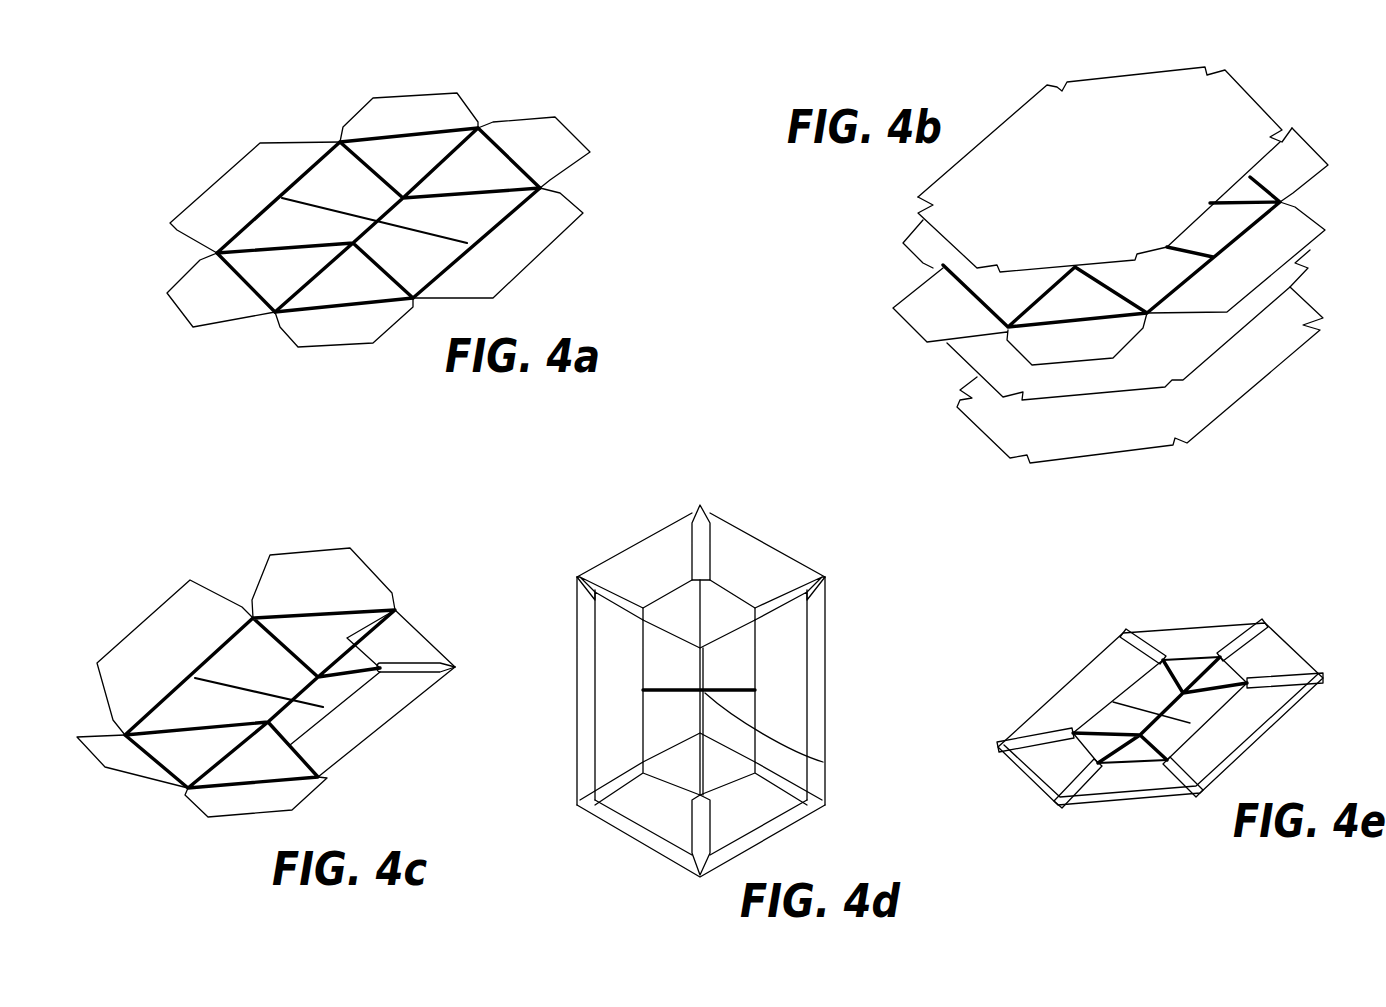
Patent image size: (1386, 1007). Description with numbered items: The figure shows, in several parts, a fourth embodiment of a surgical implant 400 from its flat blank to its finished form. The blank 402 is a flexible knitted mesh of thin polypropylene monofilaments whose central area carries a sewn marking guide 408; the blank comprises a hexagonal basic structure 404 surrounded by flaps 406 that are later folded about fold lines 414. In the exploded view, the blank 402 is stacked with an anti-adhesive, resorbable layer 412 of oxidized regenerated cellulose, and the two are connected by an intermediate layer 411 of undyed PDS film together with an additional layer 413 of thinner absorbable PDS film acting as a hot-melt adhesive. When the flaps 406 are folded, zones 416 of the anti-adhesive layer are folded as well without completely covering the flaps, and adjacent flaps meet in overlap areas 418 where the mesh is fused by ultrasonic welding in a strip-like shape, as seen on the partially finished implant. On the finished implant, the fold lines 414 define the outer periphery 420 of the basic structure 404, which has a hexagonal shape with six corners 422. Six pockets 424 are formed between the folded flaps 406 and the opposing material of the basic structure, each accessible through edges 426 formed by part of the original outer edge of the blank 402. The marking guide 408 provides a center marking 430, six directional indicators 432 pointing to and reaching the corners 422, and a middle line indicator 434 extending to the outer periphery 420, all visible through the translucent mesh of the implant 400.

In FIG. 4d, the surgical implant 400 is at (731, 677).
In FIG. 4e, the surgical implant 400 is at (1152, 720).
In FIG. 4a, the blank 402 is at (403, 242).
In FIG. 4b, the blank 402 is at (920, 297).
In FIG. 4a, the basic structure 404 is at (360, 198).
In FIG. 4c, the basic structure 404 is at (225, 718).
In FIG. 4a, the flaps 406 is at (252, 368).
In FIG. 4c, the flaps 406 is at (357, 572).
In FIG. 4a, the marking guide 408 is at (427, 228).
In FIG. 4c, the marking guide 408 is at (263, 690).
In FIG. 4b, the intermediate layer 411 is at (975, 353).
In FIG. 4b, the anti-adhesive resorbable layer 412 is at (1239, 407).
In FIG. 4b, the additional layer 413 is at (1248, 117).
In FIG. 4c, the fold lines 414 is at (413, 628).
In FIG. 4c, the zones of anti-adhesive layer 416 is at (367, 732).
In FIG. 4e, the zones of anti-adhesive layer 416 is at (1040, 778).
In FIG. 4c, the overlap areas 418 is at (413, 672).
In FIG. 4d, the overlap areas 418 is at (772, 602).
In FIG. 4d, the outer periphery 420 is at (825, 730).
In FIG. 4e, the outer periphery 420 is at (1127, 800).
In FIG. 4d, the corners 422 is at (823, 577).
In FIG. 4e, the corners 422 is at (1263, 622).
In FIG. 4d, the pockets 424 is at (650, 570).
In FIG. 4e, the pockets 424 is at (1188, 640).
In FIG. 4d, the edges 426 is at (645, 690).
In FIG. 4d, the center marking 430 is at (823, 762).
In FIG. 4d, the directional indicators 432 is at (693, 770).
In FIG. 4e, the directional indicators 432 is at (1148, 677).
In FIG. 4d, the middle line indicator 434 is at (720, 688).